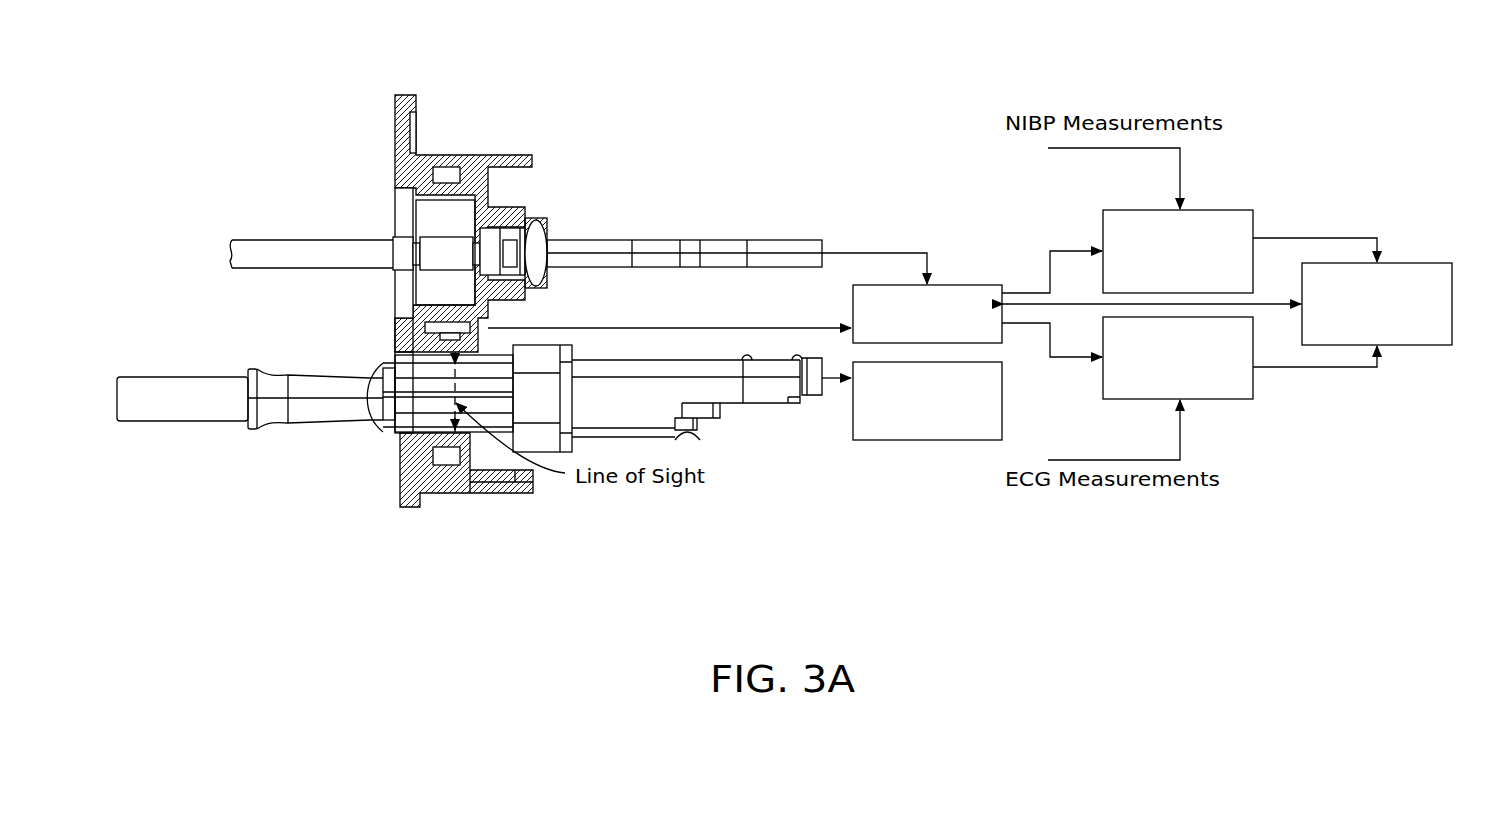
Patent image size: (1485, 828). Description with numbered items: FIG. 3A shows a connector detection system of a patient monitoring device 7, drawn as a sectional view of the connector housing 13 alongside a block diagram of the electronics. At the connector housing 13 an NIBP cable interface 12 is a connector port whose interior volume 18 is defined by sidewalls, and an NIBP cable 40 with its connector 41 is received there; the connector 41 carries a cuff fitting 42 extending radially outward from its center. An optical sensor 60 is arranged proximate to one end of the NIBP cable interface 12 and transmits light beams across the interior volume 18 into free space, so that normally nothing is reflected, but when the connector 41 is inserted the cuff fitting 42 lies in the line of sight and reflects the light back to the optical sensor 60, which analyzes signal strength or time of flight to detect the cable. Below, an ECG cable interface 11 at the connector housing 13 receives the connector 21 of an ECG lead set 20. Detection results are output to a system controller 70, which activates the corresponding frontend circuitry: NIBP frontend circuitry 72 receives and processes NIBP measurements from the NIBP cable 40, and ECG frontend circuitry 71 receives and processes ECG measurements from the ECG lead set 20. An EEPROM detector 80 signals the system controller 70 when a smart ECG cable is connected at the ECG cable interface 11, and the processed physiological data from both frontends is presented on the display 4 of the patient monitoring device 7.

The patient monitoring device 7 is at (407, 93).
The connector housing 13 is at (395, 140).
The NIBP cable interface 12 is at (394, 212).
The NIBP cable 40 is at (270, 240).
The connector 41 is at (443, 270).
The interior volume 18 is at (457, 234).
The cuff fitting 42 is at (523, 213).
The optical sensor 60 is at (517, 247).
The ECG lead set 20 is at (183, 422).
The connector 21 is at (383, 430).
The ECG cable interface 11 is at (417, 440).
The system controller 70 is at (957, 285).
The EEPROM detector 80 is at (925, 442).
The NIBP frontend circuitry 72 is at (1207, 210).
The ECG frontend circuitry 71 is at (1253, 382).
The display 4 is at (1413, 263).